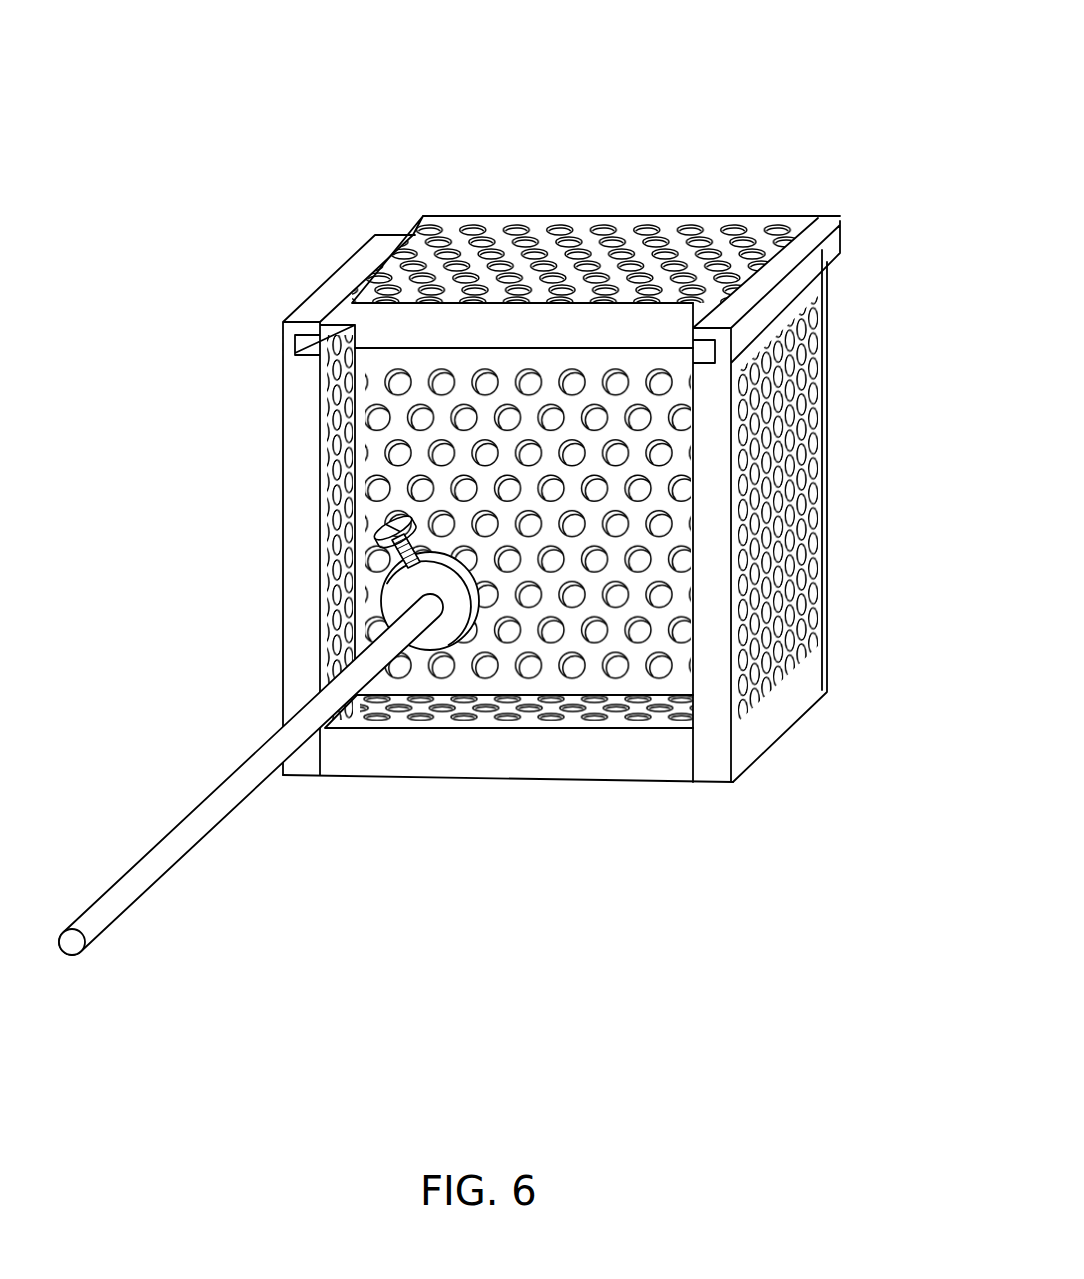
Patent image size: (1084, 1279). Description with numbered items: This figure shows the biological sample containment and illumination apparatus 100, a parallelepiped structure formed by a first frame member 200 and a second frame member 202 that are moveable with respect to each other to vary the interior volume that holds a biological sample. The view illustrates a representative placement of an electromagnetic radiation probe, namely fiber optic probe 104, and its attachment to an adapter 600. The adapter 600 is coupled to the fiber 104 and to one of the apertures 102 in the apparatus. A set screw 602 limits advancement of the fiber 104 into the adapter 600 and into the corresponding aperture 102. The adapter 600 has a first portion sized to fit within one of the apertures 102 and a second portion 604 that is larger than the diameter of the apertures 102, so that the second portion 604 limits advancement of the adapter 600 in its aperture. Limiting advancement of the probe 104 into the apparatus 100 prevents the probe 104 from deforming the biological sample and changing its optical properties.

The biological sample containment and illumination apparatus 100 is at (506, 482).
The apertures 102 is at (638, 643).
The fiber optic probe 104 is at (170, 856).
The first frame member 200 is at (293, 433).
The second frame member 202 is at (842, 250).
The adapter 600 is at (476, 707).
The set screw 602 is at (370, 537).
The second portion 604 is at (477, 588).